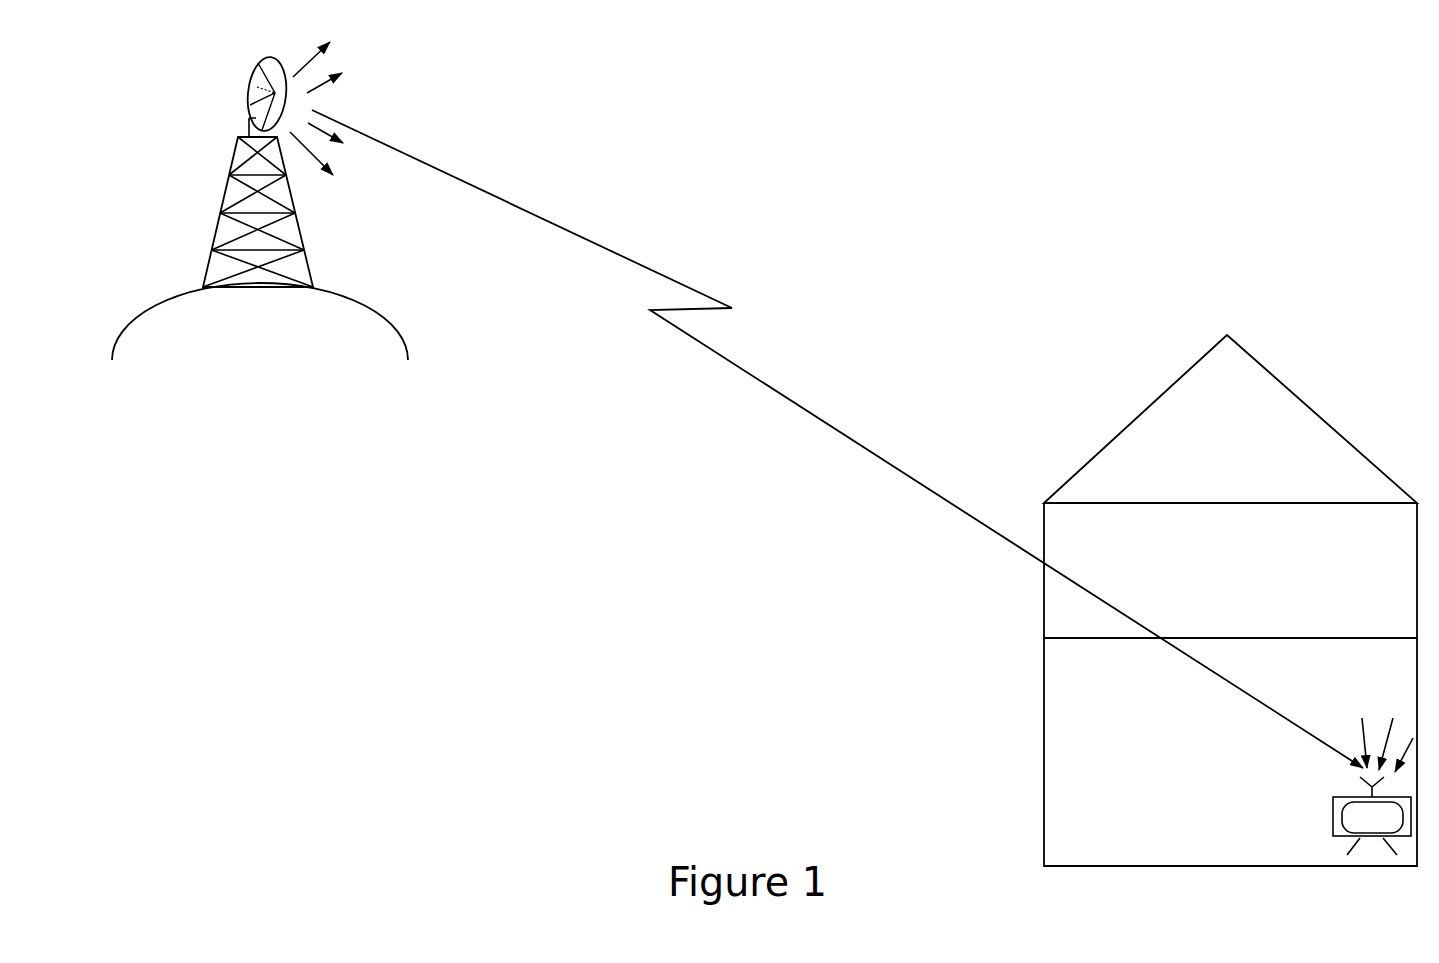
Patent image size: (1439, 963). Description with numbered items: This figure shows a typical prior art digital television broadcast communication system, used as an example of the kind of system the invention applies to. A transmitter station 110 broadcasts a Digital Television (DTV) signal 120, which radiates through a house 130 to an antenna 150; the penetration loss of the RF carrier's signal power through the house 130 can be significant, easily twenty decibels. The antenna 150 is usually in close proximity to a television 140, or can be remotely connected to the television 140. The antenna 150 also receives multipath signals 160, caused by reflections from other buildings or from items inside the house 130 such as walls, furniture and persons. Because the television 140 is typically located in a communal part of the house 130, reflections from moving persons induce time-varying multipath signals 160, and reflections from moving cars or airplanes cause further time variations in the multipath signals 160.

The transmitter station 110 is at (210, 210).
The Digital Television (DTV) signal 120 is at (758, 367).
The house 130 is at (1040, 752).
The television 140 is at (1332, 823).
The antenna 150 is at (1350, 777).
The multipath signals 160 is at (1390, 732).